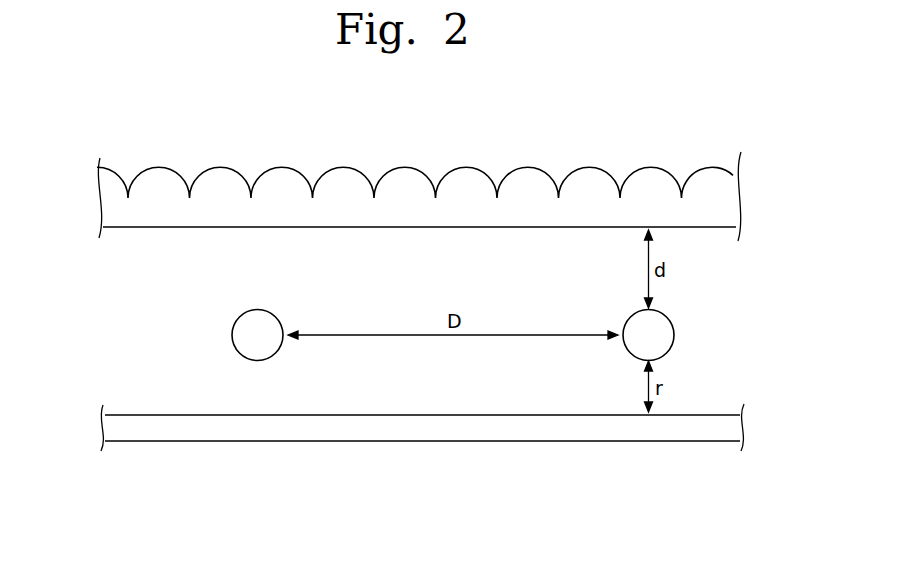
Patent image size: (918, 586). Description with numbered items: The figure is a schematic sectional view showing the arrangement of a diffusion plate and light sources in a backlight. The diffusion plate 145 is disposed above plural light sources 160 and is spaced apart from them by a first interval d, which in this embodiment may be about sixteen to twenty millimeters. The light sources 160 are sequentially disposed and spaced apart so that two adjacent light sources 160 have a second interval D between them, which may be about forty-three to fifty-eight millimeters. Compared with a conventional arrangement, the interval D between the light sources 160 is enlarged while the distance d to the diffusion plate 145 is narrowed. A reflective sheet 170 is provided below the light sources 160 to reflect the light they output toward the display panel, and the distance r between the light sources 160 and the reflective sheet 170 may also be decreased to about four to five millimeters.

The diffusion plate 145 is at (527, 190).
The light sources 160 is at (265, 318).
The reflective sheet 170 is at (527, 430).